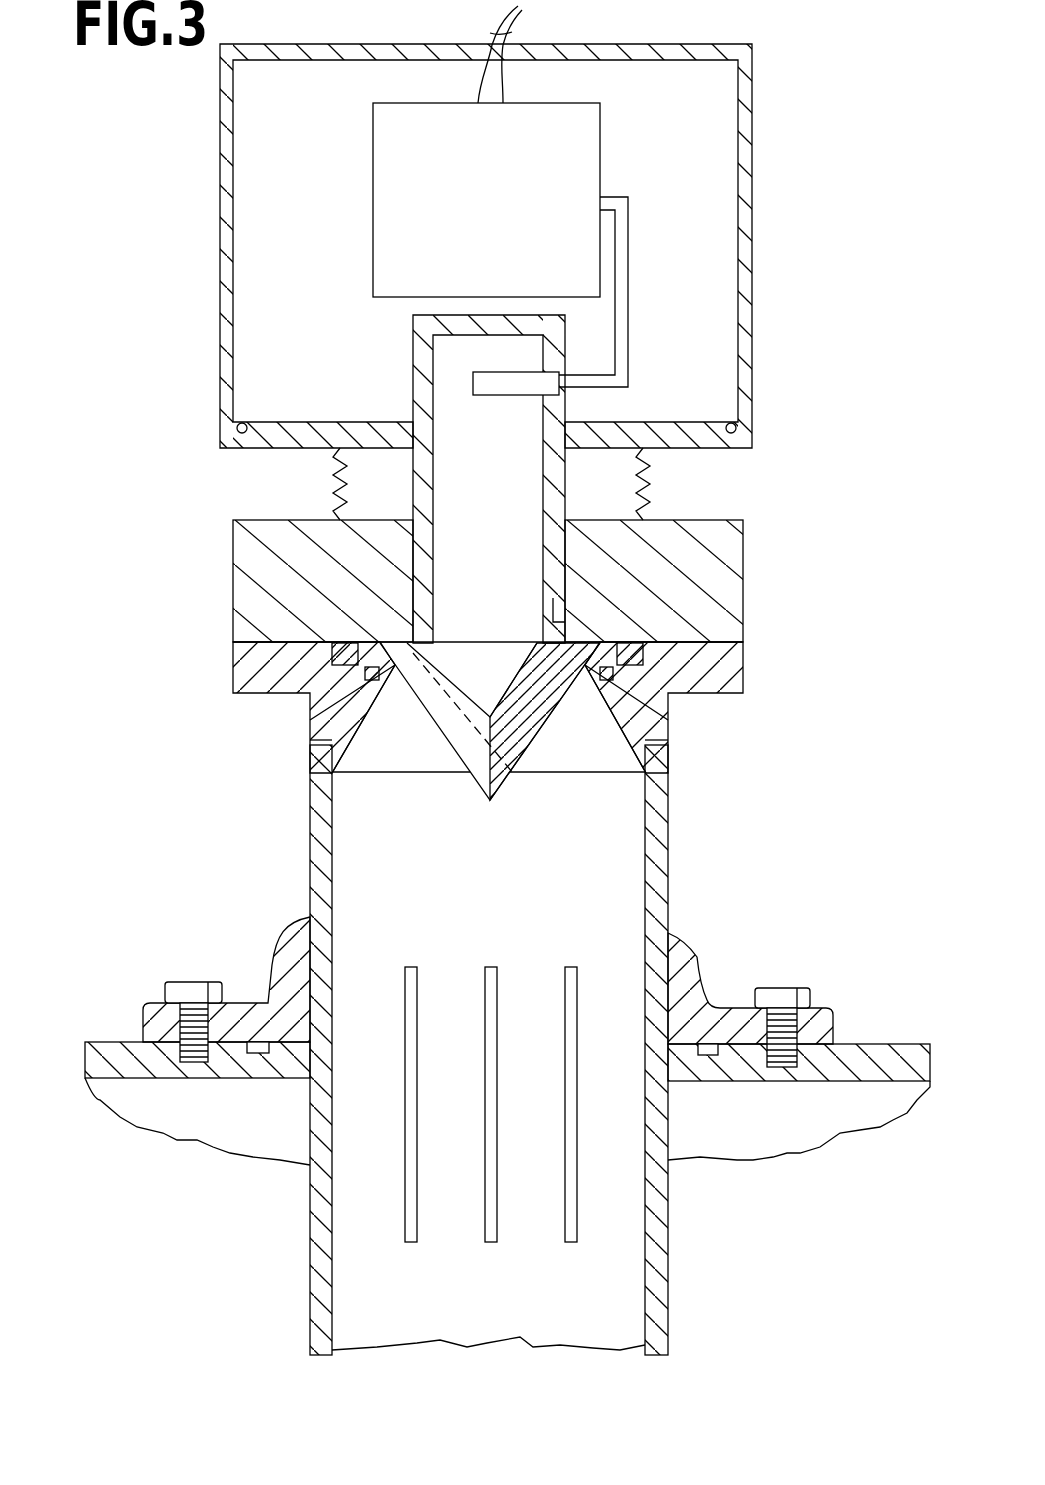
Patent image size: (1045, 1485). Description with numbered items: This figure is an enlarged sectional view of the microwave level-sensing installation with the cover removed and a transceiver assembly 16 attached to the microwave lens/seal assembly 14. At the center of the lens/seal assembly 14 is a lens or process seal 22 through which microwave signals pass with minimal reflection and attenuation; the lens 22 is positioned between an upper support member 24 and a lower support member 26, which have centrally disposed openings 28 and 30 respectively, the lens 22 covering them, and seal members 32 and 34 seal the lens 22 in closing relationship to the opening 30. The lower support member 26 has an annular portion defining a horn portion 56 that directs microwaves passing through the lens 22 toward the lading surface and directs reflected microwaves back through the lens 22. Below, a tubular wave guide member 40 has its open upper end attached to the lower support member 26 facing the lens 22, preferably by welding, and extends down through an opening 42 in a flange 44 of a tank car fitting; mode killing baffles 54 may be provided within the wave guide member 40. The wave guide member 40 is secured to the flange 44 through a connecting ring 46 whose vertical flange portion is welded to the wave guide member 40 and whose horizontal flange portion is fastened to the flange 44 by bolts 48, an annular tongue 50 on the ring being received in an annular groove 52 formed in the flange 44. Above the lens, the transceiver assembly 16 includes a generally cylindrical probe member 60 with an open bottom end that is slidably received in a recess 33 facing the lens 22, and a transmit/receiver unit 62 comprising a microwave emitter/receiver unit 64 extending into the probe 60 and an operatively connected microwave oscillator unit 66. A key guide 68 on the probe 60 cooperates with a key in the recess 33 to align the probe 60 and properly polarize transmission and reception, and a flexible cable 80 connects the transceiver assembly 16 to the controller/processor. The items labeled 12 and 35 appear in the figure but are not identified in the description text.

The roof or wall structure 12 is at (830, 1127).
The microwave lens/seal assembly 14 is at (508, 619).
The transceiver assembly 16 is at (523, 246).
The lens or process seal 22 is at (548, 690).
The upper support member 24 is at (720, 533).
The lower support member 26 is at (740, 678).
The opening 28 is at (455, 628).
The opening 30 is at (345, 672).
The seal member 32 is at (645, 632).
The recess 33 is at (400, 528).
The seal member 34 is at (320, 713).
The spring end 35 is at (647, 478).
The wave guide member 40 is at (668, 1220).
The opening 42 is at (315, 1082).
The flange 44 is at (880, 1055).
The connecting ring 46 is at (710, 1008).
The bolts 48 is at (782, 995).
The annular tongue 50 is at (258, 1040).
The annular groove 52 is at (277, 1057).
The mode killing baffles 54 is at (573, 967).
The horn portion 56 is at (312, 757).
The probe member 60 is at (427, 463).
The transmit/receiver unit 62 is at (712, 205).
The microwave emitter/receiver unit 64 is at (523, 380).
The microwave oscillator unit 66 is at (577, 148).
The key guide 68 is at (565, 608).
The flexible cable 80 is at (507, 33).